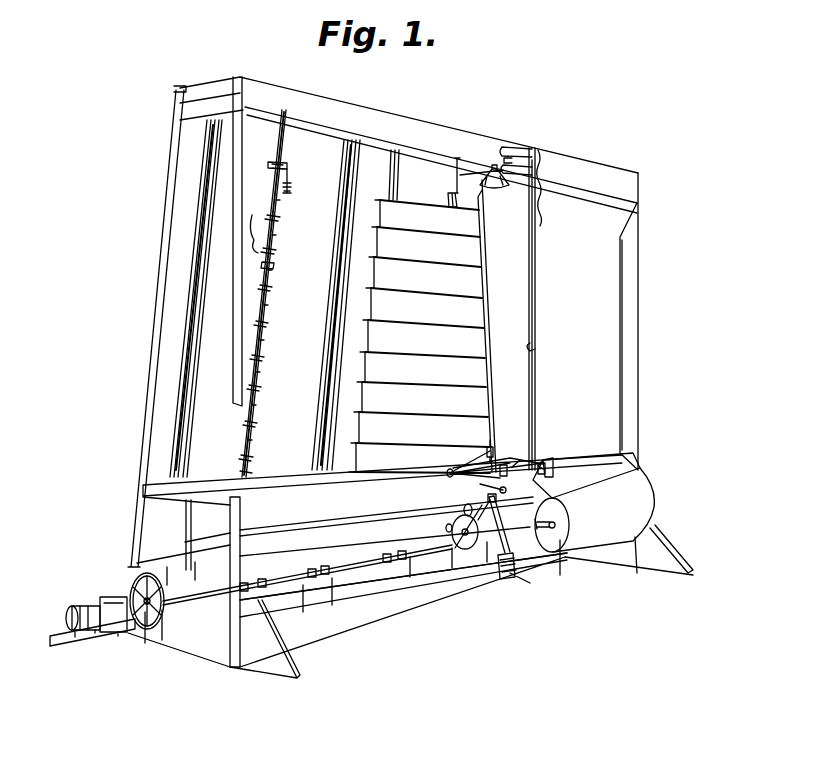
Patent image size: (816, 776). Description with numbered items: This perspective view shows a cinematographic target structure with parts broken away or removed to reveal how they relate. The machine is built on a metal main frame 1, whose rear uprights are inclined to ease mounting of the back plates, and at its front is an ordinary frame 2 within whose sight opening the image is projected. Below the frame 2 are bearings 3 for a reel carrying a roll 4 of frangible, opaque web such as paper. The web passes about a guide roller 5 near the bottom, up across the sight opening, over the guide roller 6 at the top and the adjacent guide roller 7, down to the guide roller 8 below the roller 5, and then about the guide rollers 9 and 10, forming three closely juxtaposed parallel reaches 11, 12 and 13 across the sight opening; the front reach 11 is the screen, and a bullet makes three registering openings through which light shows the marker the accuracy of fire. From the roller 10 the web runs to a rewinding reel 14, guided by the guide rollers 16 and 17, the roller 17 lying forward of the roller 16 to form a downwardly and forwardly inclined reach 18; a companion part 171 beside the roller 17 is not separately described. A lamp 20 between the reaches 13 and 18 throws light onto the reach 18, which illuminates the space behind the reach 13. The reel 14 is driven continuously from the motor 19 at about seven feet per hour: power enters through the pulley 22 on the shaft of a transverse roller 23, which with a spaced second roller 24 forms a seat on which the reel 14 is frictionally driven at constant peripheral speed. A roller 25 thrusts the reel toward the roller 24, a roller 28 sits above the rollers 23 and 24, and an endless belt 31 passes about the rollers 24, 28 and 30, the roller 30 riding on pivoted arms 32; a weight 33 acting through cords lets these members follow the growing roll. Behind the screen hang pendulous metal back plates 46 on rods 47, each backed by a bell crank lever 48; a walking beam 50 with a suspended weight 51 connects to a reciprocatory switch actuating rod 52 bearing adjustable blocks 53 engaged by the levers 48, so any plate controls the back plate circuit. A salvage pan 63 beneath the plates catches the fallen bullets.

The main frame 1 is at (405, 135).
The frame 2 is at (620, 226).
The bearings 3 is at (287, 652).
The roll of web 4 is at (630, 500).
The guide roller 5 is at (560, 462).
The guide roller 6 is at (515, 150).
The guide roller 7 is at (520, 170).
The guide roller 8 is at (487, 487).
The guide roller 9 is at (514, 466).
The guide roller 10 is at (541, 180).
The front reach 11 is at (539, 318).
The reach 12 is at (539, 328).
The reach 13 is at (536, 347).
The rewinding reel 14 is at (460, 540).
The guide roller 16 is at (467, 190).
The guide roller 17 is at (512, 467).
The shaft collar 171 is at (448, 474).
The inclined reach 18 is at (487, 367).
The motor 19 is at (75, 605).
The lamp 20 is at (494, 190).
The pulley 22 is at (140, 580).
The roller 23 is at (390, 554).
The second roller 24 is at (405, 567).
The roller 25 is at (446, 529).
The roller 28 is at (466, 506).
The roller 30 is at (550, 497).
The endless belt 31 is at (486, 498).
The pivoted arms 32 is at (504, 527).
The weight 33 is at (520, 561).
The back plates 46 is at (403, 307).
The rods 47 is at (208, 262).
The bell crank lever 48 is at (275, 221).
The walking beam 50 is at (285, 166).
The weight 51 is at (293, 189).
The switch actuating rod 52 is at (262, 267).
The blocks 53 is at (253, 225).
The salvage pan 63 is at (468, 458).